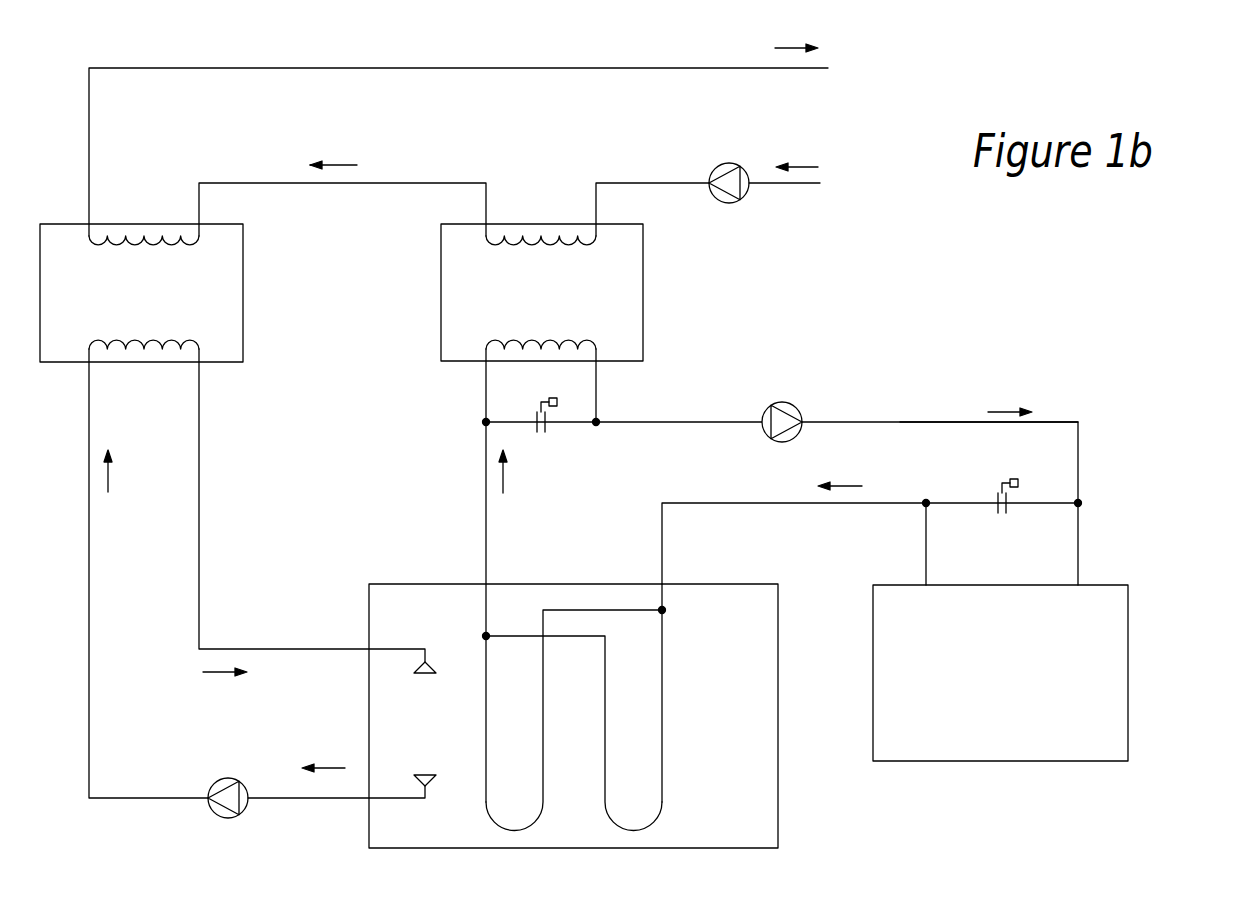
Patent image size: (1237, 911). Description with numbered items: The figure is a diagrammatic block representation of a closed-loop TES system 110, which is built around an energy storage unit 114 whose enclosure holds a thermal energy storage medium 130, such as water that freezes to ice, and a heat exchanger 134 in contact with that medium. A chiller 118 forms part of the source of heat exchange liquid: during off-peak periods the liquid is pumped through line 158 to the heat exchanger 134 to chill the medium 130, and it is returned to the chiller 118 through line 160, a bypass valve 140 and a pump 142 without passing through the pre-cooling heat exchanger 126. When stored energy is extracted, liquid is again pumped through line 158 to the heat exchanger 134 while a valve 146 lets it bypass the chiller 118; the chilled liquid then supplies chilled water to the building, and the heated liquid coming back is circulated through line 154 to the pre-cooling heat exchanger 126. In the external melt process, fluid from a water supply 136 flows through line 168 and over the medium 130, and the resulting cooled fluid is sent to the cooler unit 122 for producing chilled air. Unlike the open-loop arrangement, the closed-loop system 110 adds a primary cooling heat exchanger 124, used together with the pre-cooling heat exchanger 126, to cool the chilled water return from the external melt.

The closed-loop TES system 110 is at (1080, 283).
The energy storage unit 114 is at (396, 503).
The chiller 118 is at (1148, 558).
The cooler unit 122 is at (483, 126).
The primary cooling heat exchanger 124 is at (268, 280).
The pre-cooling heat exchanger 126 is at (664, 289).
The thermal energy storage medium 130 is at (737, 800).
The heat exchanger 134 is at (664, 657).
The water supply 136 is at (541, 184).
The bypass valve 140 is at (541, 398).
The pump 142 is at (782, 405).
The valve 146 is at (1002, 479).
The line 154 is at (768, 185).
The line 158 is at (696, 502).
The line 160 is at (915, 421).
The line 168 is at (268, 648).